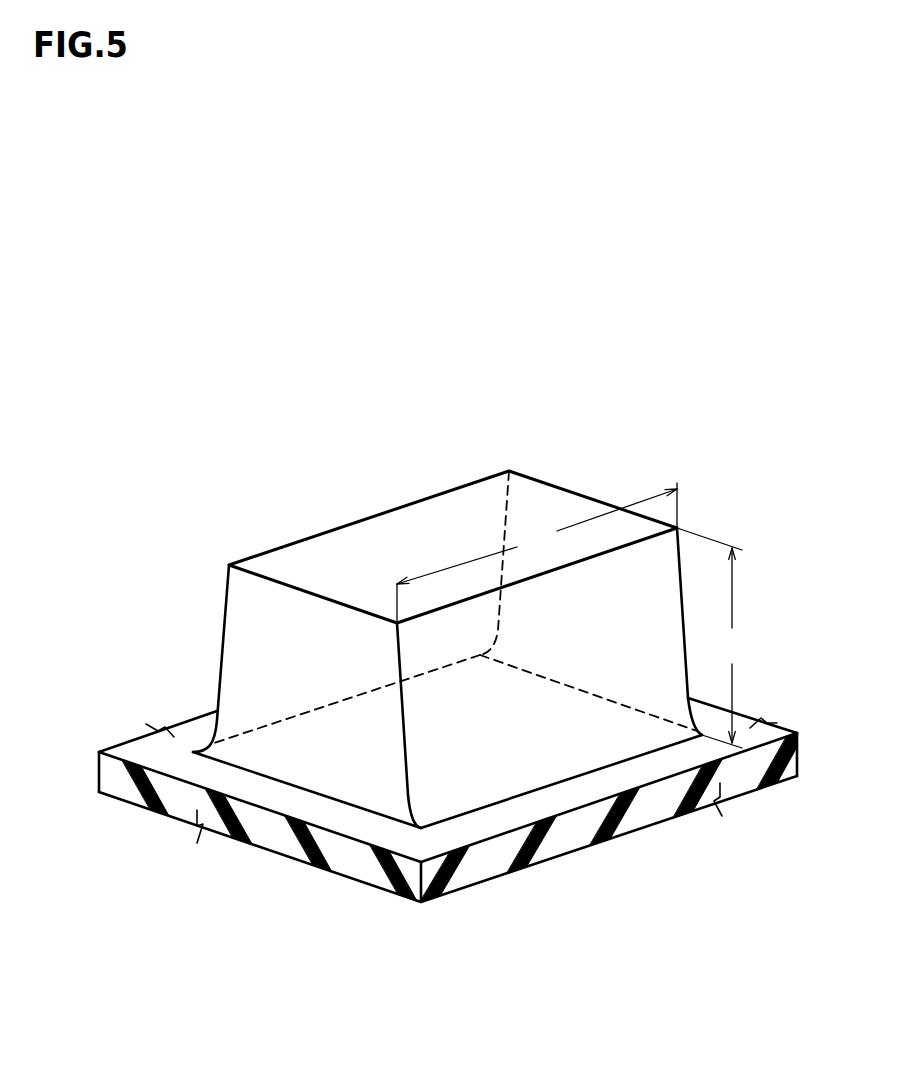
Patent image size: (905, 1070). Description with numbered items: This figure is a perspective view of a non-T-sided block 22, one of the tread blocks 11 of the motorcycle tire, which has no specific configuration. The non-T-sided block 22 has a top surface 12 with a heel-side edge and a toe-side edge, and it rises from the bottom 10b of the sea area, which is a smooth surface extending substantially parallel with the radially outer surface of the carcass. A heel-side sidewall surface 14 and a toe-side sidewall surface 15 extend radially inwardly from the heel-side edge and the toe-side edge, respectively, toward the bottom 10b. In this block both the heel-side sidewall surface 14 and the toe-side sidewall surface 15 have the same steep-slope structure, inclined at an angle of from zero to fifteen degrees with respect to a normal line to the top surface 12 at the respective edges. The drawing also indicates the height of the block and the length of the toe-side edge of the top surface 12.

The bottom of the sea area 10b is at (315, 817).
The blocks 11 is at (472, 638).
The non-T-sided block 22 is at (472, 638).
The top surface 12 is at (453, 525).
The heel-side sidewall surface 14 is at (378, 558).
The toe-side sidewall surface 15 is at (568, 717).